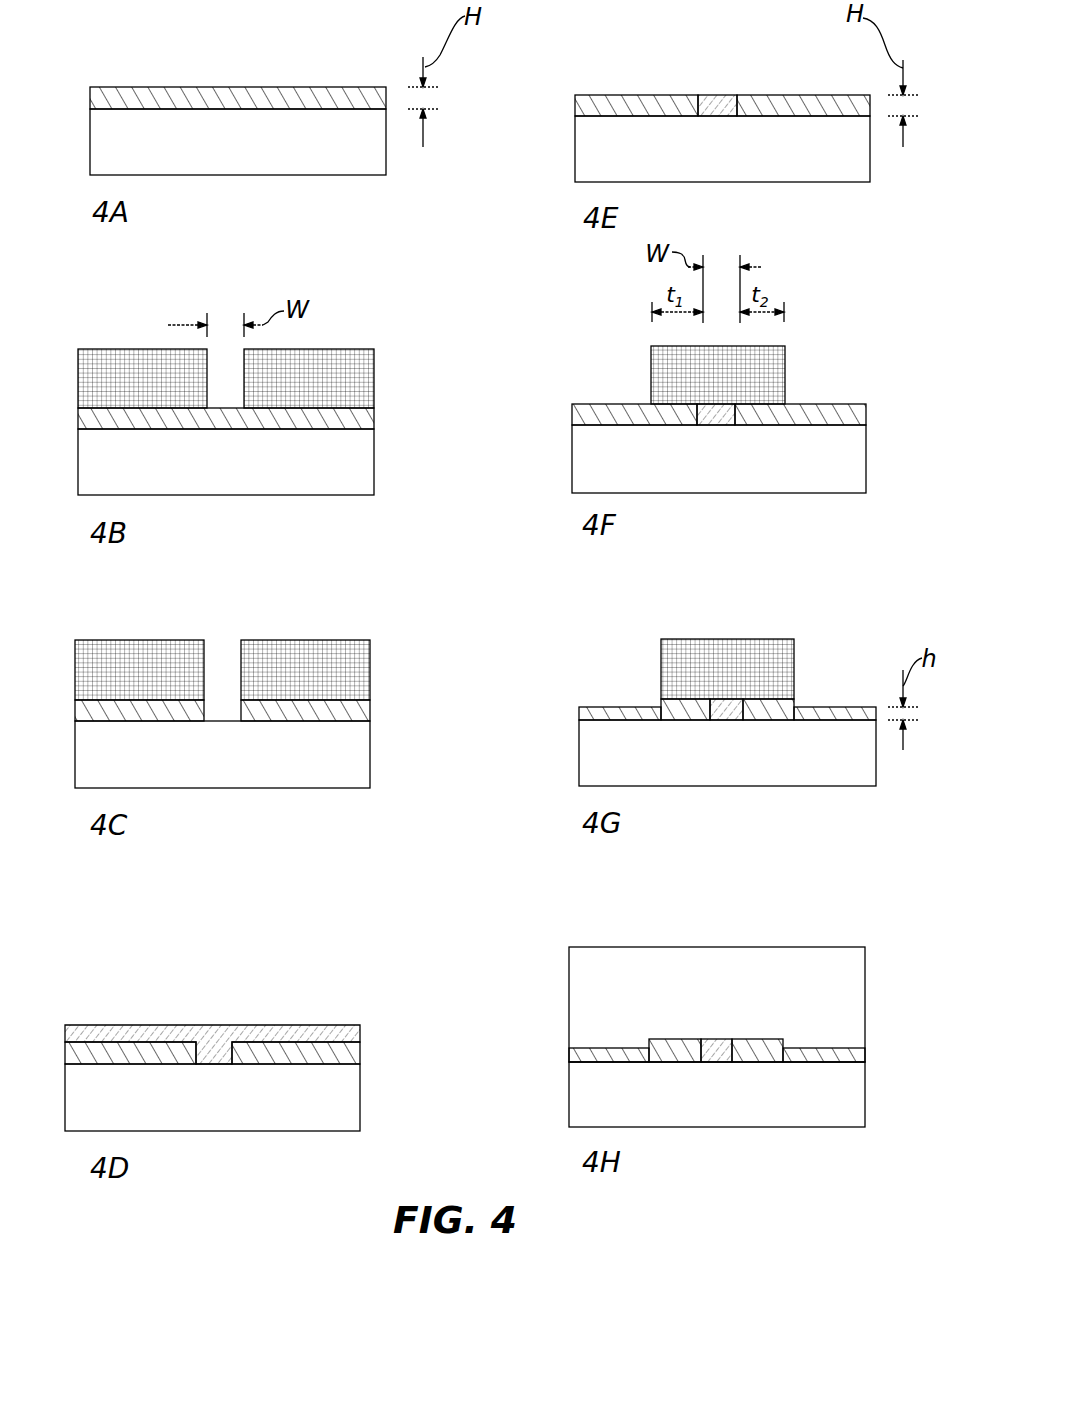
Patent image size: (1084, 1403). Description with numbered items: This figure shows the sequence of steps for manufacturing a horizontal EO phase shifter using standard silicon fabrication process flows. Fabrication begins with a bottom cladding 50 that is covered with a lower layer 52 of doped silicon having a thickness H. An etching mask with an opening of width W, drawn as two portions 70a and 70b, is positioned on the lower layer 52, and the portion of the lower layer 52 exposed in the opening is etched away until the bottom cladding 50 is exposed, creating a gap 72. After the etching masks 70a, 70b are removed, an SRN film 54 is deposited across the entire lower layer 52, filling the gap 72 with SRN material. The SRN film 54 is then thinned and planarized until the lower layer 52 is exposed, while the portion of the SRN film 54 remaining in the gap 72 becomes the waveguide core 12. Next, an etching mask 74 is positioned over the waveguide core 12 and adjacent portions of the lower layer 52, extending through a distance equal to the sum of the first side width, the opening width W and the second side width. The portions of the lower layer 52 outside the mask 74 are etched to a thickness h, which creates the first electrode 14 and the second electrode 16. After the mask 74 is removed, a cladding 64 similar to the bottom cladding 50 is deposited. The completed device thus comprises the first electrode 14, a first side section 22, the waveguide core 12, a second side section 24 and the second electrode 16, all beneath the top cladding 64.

The bottom cladding 50 is at (238, 152).
The lower layer 52 is at (143, 88).
The waveguide core 12 is at (722, 95).
The etching mask 70a is at (93, 349).
The etching mask 70b is at (320, 349).
The gap 72 is at (221, 718).
The SRN film 54 is at (231, 1025).
The etching mask 74 is at (785, 366).
The first electrode 14 is at (620, 707).
The second electrode 16 is at (806, 707).
The first side section 22 is at (686, 1039).
The second side section 24 is at (750, 1039).
The cladding 64 is at (767, 962).